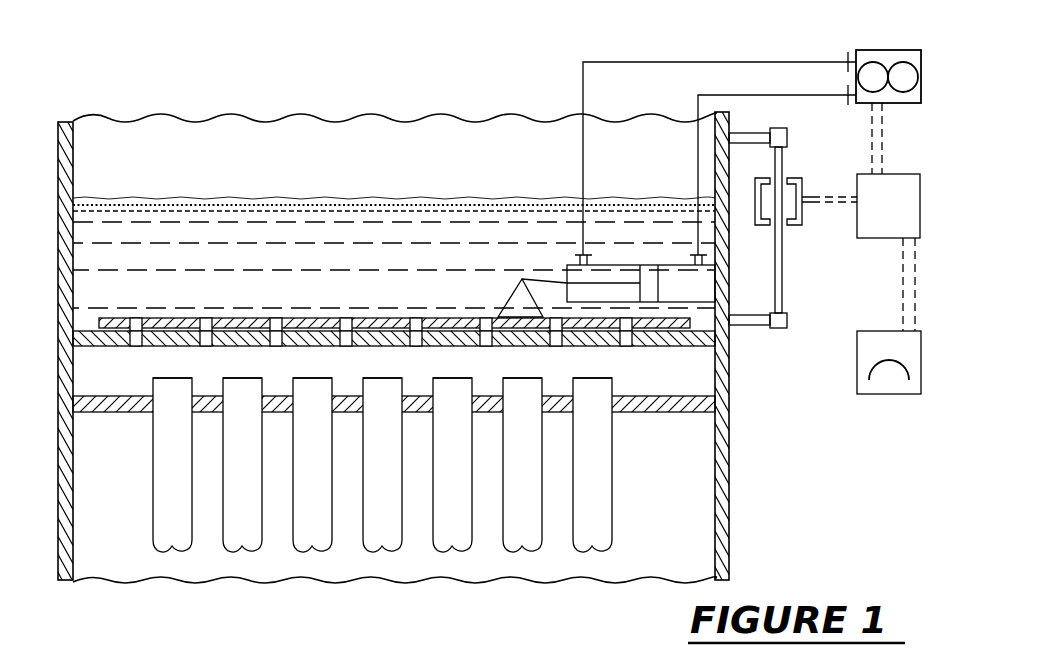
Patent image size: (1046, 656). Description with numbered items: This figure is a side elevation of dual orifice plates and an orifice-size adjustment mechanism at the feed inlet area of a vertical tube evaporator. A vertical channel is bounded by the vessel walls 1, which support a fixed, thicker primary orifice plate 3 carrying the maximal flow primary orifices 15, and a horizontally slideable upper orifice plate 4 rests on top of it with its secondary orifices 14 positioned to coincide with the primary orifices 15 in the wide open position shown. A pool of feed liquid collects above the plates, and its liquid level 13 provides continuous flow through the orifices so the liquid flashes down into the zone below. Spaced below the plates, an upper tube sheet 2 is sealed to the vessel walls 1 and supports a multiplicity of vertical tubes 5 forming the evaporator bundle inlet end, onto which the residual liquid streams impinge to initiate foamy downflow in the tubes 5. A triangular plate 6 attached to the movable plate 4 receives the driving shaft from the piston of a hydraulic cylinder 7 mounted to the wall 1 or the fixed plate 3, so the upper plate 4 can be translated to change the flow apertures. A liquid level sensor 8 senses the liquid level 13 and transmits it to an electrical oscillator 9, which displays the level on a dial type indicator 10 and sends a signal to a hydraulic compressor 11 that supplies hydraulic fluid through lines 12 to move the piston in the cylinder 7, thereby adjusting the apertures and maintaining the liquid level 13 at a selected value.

The vessel wall 1 is at (56, 150).
The tube sheet 2 is at (690, 413).
The primary orifice plate 3 is at (690, 347).
The slideable orifice plate 4 is at (241, 318).
The vertical tubes 5 is at (615, 530).
The triangular plate 6 is at (505, 302).
The hydraulic cylinder 7 is at (652, 265).
The liquid level sensor 8 is at (803, 215).
The electrical oscillator 9 is at (890, 240).
The dial type indicator 10 is at (921, 386).
The hydraulic compressor 11 is at (890, 50).
The hydraulic lines 12 is at (758, 95).
The liquid level 13 is at (212, 196).
The secondary orifices 14 is at (415, 318).
The primary orifices 15 is at (415, 347).